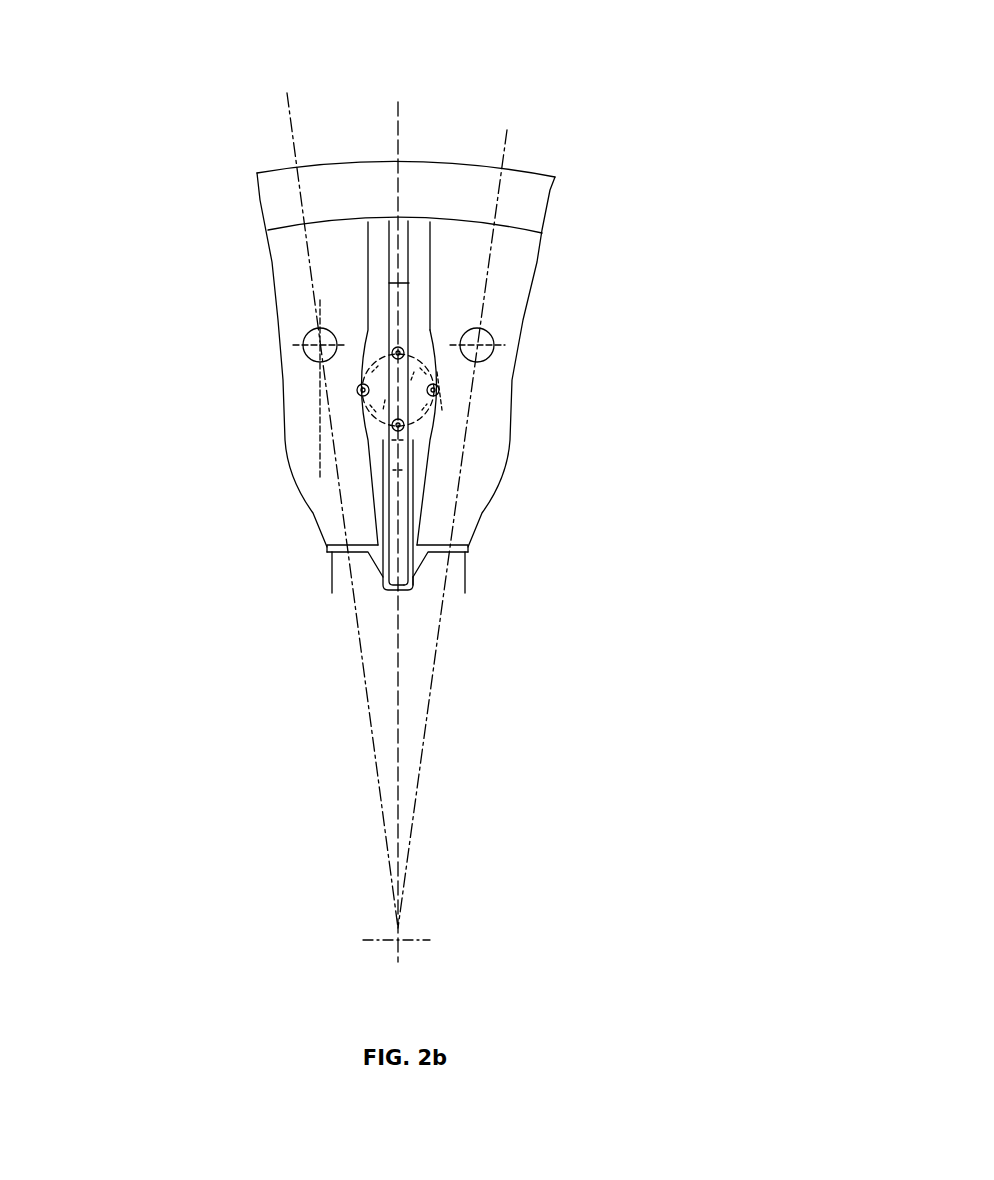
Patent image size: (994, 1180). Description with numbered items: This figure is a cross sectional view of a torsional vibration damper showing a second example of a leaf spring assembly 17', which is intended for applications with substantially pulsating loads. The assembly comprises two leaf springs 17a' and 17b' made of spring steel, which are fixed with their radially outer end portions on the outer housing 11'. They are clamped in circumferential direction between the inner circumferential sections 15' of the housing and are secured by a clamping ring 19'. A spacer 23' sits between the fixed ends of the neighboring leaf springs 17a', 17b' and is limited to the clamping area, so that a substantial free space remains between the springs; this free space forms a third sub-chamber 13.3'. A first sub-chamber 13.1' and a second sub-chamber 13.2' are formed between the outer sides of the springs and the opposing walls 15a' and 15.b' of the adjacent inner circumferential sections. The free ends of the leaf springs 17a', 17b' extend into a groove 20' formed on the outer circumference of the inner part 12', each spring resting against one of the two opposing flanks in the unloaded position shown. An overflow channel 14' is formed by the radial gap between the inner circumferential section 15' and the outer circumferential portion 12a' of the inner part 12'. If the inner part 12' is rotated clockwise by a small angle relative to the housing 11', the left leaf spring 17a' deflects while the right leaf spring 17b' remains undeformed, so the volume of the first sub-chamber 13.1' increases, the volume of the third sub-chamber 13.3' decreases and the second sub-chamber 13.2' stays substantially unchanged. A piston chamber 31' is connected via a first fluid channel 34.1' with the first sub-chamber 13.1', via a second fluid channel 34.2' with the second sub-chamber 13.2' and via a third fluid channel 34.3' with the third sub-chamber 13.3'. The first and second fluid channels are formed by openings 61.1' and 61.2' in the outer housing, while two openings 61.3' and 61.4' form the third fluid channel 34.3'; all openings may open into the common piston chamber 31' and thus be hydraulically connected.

The outer housing 11' is at (313, 100).
The clamping ring 19' is at (532, 124).
The inner circumferential sections 15' is at (434, 360).
The spacer 23' is at (240, 192).
The leaf spring assembly 17' is at (414, 299).
The leaf spring 17a' is at (363, 322).
The leaf spring 17b' is at (450, 322).
The piston chamber 31' is at (518, 173).
The opposing wall 15a' is at (225, 383).
The opposing wall 15.b' is at (615, 437).
The third fluid channel 34.3' is at (238, 411).
The first fluid channel 34.1' is at (220, 376).
The second fluid channel 34.2' is at (620, 376).
The opening 61.1' is at (215, 390).
The opening 61.2' is at (625, 397).
The opening 61.3' is at (609, 338).
The opening 61.4' is at (602, 468).
The first sub-chamber 13.1' is at (235, 515).
The second sub-chamber 13.2' is at (605, 515).
The third sub-chamber 13.3' is at (237, 552).
The overflow channel 14' is at (270, 635).
The outer circumferential portion 12a' is at (301, 680).
The inner part 12' is at (363, 680).
The groove 20' is at (541, 684).